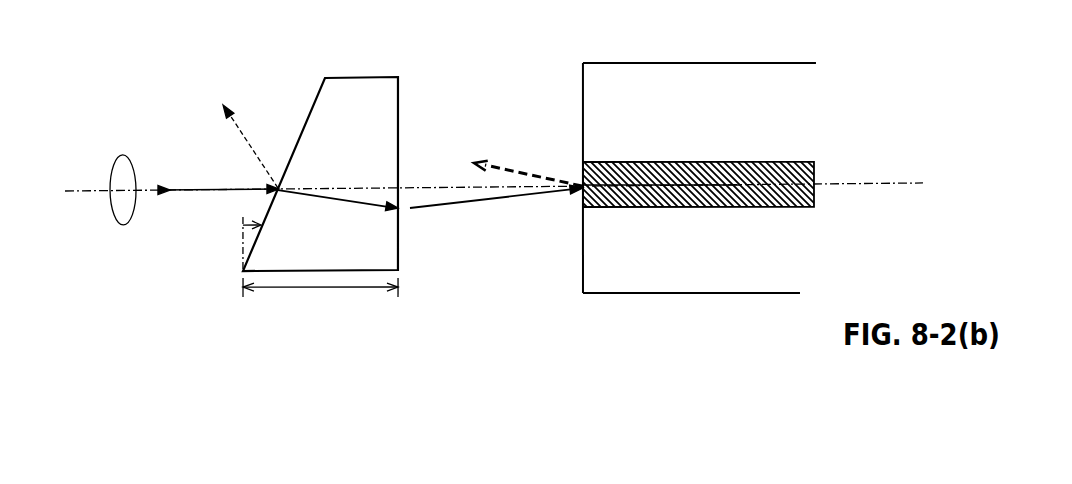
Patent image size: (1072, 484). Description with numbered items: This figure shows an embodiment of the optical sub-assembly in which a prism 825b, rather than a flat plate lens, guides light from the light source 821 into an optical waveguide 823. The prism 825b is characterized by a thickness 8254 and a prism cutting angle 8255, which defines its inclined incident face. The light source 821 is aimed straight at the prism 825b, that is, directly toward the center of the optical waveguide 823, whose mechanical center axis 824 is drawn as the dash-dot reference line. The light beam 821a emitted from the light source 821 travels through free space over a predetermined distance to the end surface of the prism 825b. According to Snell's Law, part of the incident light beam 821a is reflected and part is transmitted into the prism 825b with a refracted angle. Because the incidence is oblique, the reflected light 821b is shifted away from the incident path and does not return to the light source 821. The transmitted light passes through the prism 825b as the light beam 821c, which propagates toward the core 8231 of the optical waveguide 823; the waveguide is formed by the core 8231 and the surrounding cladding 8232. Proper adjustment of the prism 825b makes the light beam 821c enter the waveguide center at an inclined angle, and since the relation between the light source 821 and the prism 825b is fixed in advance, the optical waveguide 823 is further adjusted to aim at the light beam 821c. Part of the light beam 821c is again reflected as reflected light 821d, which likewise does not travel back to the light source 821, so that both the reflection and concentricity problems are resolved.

The light source 821 is at (118, 173).
The light beam 821a is at (218, 202).
The reflected light 821b is at (258, 130).
The light beam 821c is at (497, 212).
The reflected light 821d is at (528, 155).
The prism 825b is at (320, 174).
The thickness 8254 is at (321, 303).
The prism cutting angle 8255 is at (216, 250).
The optical waveguide 823 is at (691, 202).
The core 8231 is at (668, 171).
The cladding 8232 is at (699, 80).
The mechanical center axis 824 is at (521, 182).